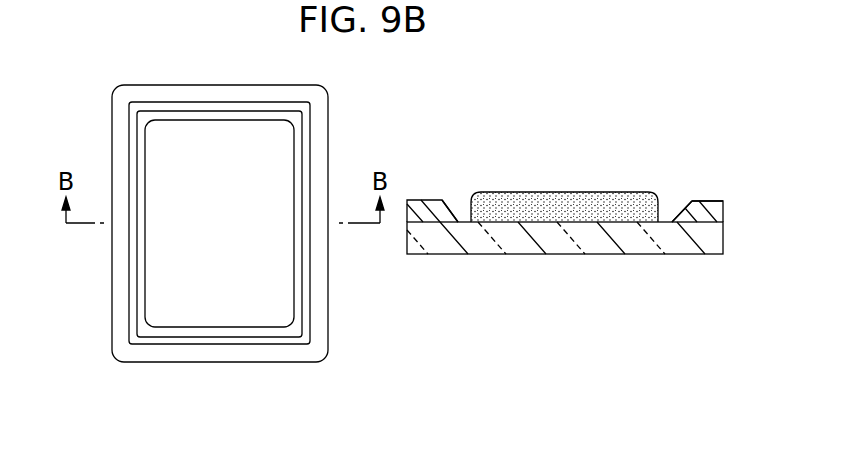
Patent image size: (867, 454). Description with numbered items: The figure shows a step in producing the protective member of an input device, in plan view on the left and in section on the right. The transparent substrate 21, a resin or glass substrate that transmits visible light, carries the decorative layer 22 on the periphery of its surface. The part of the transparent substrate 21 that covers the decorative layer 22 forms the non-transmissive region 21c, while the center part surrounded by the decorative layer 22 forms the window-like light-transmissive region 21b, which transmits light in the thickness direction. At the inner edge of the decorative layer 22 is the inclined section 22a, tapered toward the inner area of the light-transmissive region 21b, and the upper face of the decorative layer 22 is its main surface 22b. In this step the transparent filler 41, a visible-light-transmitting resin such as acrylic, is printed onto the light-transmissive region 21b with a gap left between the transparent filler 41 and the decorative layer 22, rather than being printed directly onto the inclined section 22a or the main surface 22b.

The transparent substrate 21 is at (298, 284).
The light-transmissive region 21b is at (462, 180).
The non-transmissive region 21c is at (673, 259).
The decorative layer 22 is at (117, 253).
The inclined section 22a is at (134, 296).
The main surface 22b is at (703, 201).
The transparent filler 41 is at (283, 138).